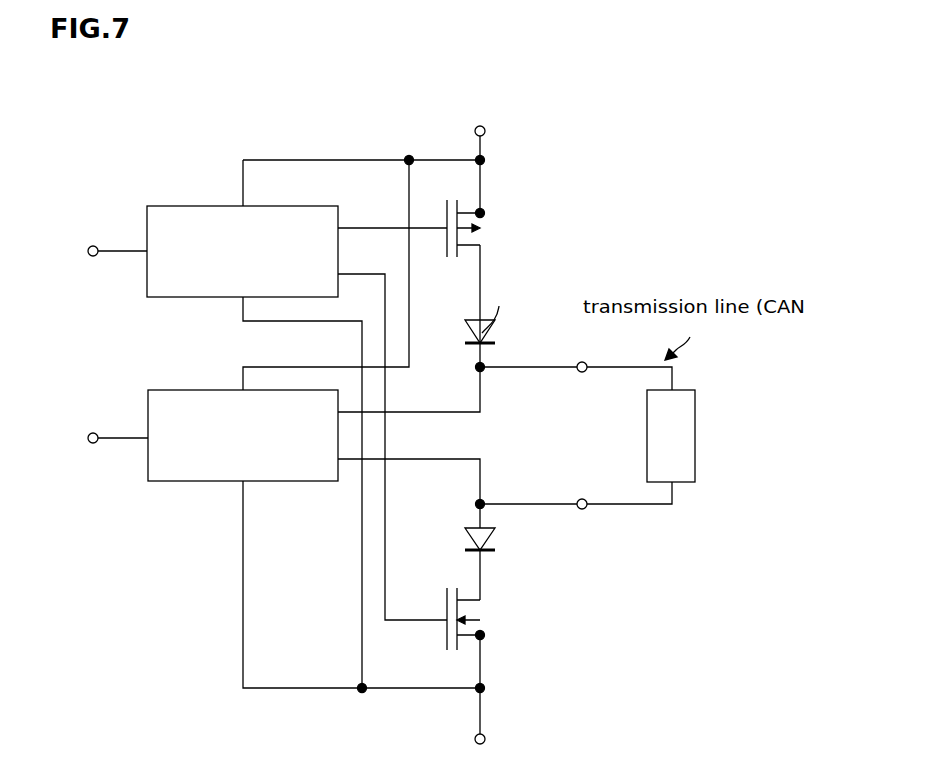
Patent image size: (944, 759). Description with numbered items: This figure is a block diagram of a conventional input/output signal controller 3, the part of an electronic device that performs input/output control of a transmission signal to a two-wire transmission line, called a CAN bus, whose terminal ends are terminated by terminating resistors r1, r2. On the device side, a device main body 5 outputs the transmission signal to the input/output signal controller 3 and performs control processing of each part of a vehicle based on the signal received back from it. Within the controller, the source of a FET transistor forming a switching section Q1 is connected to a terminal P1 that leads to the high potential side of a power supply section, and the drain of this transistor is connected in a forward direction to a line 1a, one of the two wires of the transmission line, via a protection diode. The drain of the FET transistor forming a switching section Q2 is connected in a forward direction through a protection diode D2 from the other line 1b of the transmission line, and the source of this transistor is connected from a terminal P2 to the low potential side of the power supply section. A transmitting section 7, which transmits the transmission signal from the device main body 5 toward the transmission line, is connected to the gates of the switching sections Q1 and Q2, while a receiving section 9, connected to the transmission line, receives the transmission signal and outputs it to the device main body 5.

The input/output signal controller 3 is at (407, 107).
The device main body 5 is at (159, 344).
The transmitting section 7 is at (292, 218).
The receiving section 9 is at (293, 473).
The switching section Q1 is at (574, 228).
The switching section Q2 is at (571, 619).
The protection diode D2 is at (483, 540).
The terminal P1 is at (545, 132).
The terminal P2 is at (545, 739).
The line 1a is at (618, 369).
The line 1b is at (610, 504).
The terminating resistor r1 is at (732, 470).
The terminating resistor r2 is at (682, 482).